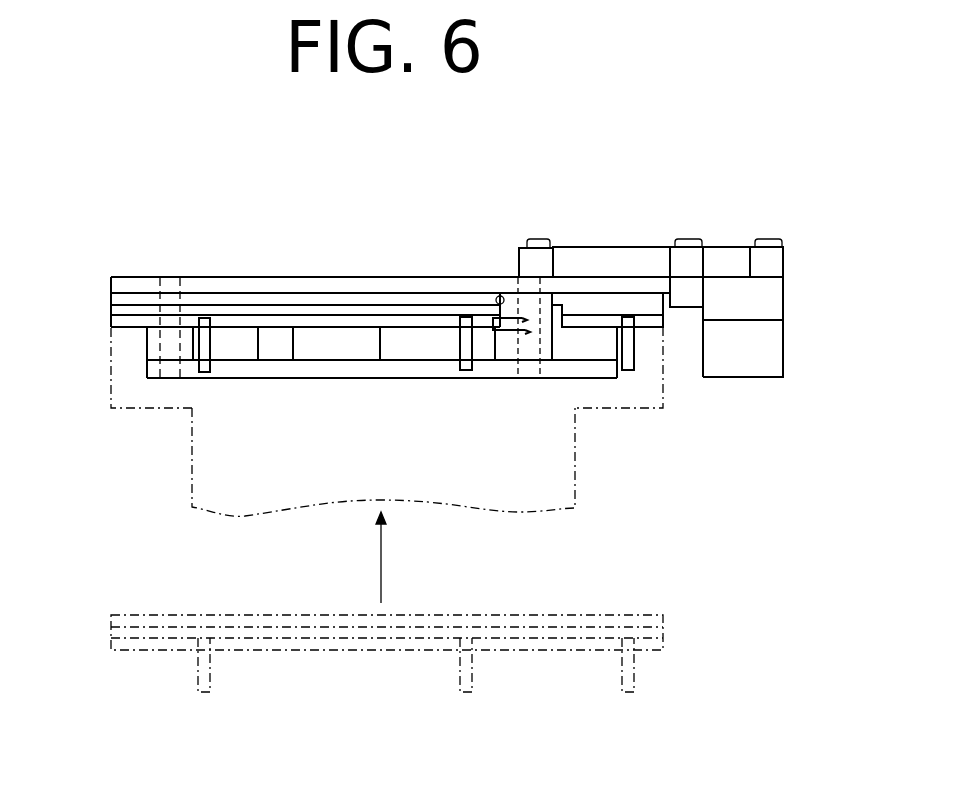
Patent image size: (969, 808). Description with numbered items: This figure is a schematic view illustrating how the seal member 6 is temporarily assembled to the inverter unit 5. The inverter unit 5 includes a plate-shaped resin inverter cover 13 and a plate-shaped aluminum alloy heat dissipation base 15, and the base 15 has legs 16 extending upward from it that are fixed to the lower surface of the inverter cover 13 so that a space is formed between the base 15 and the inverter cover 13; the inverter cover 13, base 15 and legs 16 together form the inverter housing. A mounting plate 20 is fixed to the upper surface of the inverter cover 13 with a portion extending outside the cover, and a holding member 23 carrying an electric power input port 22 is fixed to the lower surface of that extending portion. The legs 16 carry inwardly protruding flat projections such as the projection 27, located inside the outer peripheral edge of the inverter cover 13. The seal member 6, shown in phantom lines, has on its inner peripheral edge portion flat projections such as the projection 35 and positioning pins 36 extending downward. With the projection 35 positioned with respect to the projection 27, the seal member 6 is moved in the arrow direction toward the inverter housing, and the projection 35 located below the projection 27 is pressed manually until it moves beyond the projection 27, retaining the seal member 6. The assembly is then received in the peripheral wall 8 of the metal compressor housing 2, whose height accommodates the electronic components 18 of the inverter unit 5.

The compressor housing 2 is at (190, 474).
The inverter unit 5 is at (201, 248).
The seal member 6 is at (111, 305).
The peripheral wall 8 is at (108, 388).
The inverter cover 13 is at (298, 277).
The heat dissipation base 15 is at (406, 378).
The legs 16 is at (147, 343).
The electronic components 18 is at (380, 343).
The mounting plate 20 is at (612, 247).
The electric power input port 22 is at (784, 338).
The holding member 23 is at (784, 292).
The projection 27 is at (494, 336).
The projection 35 is at (500, 296).
The positioning pins 36 is at (210, 345).